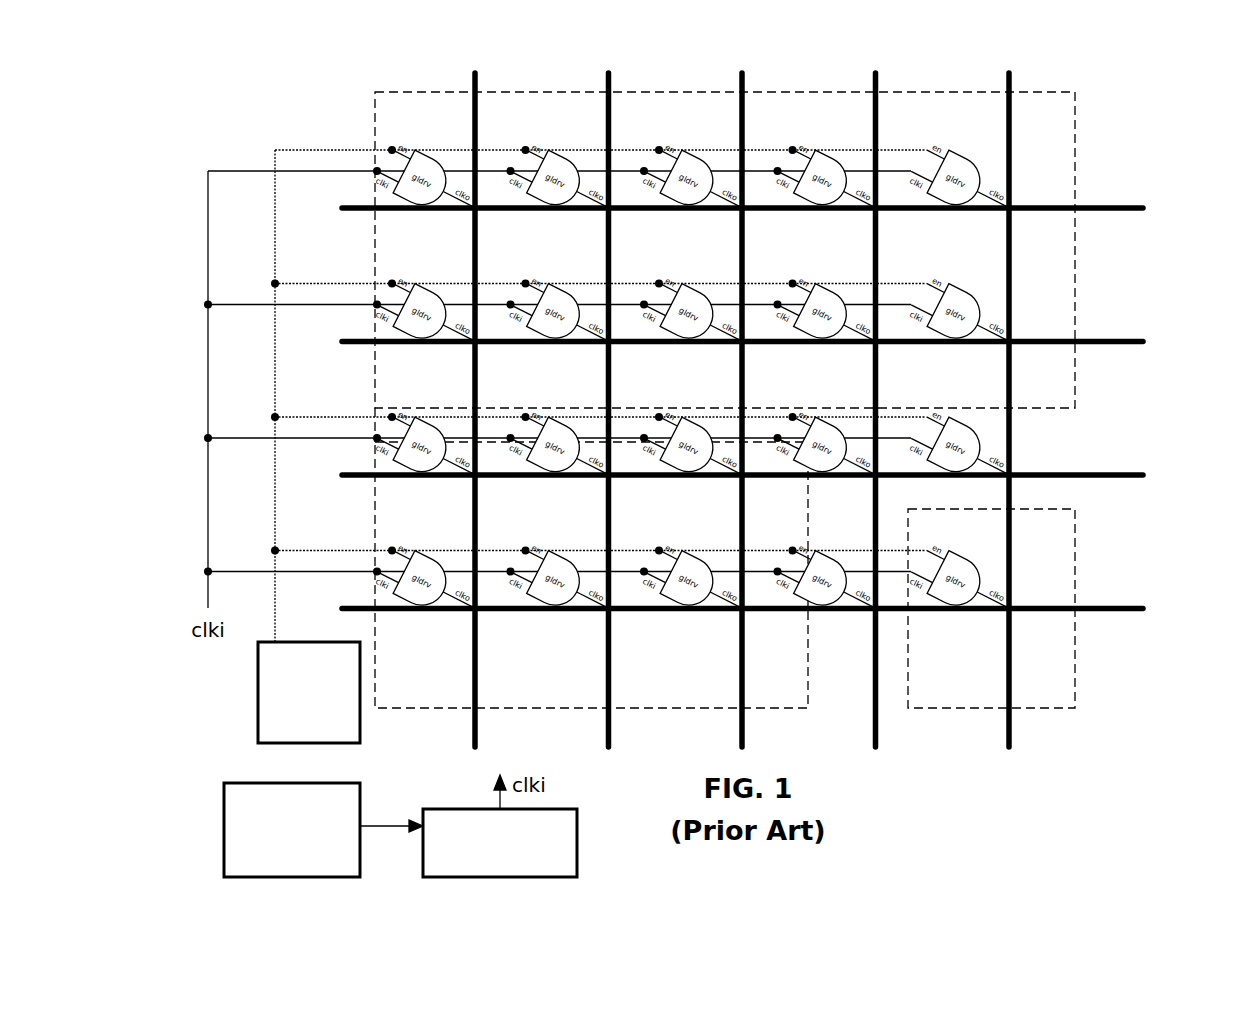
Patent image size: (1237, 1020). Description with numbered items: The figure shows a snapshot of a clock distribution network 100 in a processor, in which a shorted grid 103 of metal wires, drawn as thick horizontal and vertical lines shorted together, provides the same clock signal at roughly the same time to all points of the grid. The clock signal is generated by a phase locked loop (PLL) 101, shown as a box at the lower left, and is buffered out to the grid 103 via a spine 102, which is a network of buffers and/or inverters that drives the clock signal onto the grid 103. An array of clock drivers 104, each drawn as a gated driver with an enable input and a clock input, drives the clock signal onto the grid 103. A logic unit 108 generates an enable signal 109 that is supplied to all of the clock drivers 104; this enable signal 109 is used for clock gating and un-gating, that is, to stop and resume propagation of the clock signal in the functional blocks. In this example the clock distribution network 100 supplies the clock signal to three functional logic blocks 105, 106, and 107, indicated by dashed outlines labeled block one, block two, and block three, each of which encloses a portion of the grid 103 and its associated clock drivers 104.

The clock distribution network 100 is at (777, 381).
The phase locked loop (PLL) 101 is at (292, 830).
The spine 102 is at (500, 843).
The shorted grid 103 is at (1108, 207).
The clock driver 104 is at (415, 150).
The functional logic block 105 is at (375, 103).
The functional logic block 106 is at (375, 525).
The functional logic block 107 is at (1075, 658).
The logic unit 108 is at (309, 692).
The enable signal 109 is at (342, 150).